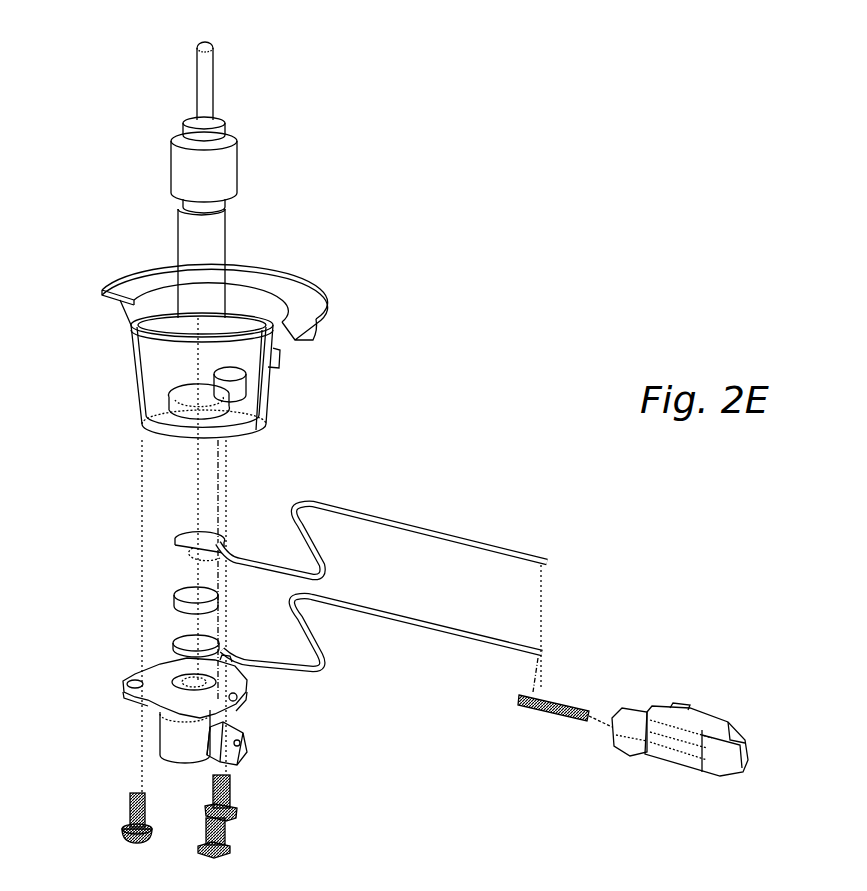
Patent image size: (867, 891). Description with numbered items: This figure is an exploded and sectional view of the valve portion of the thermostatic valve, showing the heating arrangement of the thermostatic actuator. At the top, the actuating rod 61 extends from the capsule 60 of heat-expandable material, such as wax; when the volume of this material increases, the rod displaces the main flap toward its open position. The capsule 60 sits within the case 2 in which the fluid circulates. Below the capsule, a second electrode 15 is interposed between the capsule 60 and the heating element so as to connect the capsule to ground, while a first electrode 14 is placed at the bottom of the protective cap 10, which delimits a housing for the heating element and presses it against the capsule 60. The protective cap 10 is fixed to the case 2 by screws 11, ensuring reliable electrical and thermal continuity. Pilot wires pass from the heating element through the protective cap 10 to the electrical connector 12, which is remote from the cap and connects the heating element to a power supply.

The actuating rod 61 is at (205, 73).
The capsule 60 is at (205, 243).
The case 2 is at (272, 405).
The second electrode 15 is at (174, 541).
The first electrode 14 is at (173, 641).
The protective cap 10 is at (182, 738).
The screws 11 is at (230, 790).
The electrical connector 12 is at (672, 748).